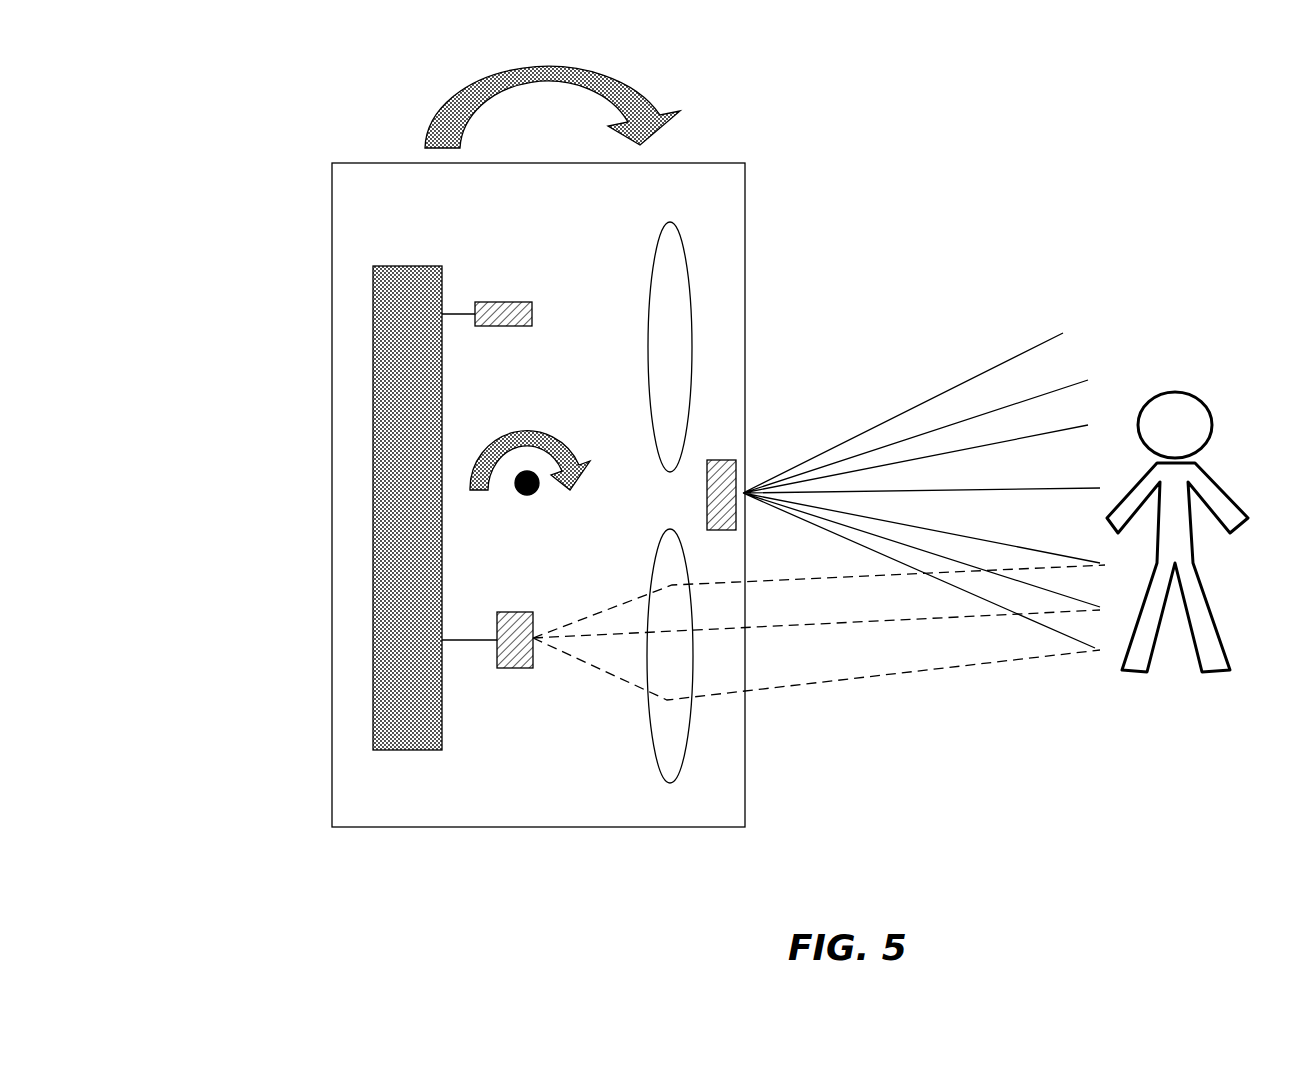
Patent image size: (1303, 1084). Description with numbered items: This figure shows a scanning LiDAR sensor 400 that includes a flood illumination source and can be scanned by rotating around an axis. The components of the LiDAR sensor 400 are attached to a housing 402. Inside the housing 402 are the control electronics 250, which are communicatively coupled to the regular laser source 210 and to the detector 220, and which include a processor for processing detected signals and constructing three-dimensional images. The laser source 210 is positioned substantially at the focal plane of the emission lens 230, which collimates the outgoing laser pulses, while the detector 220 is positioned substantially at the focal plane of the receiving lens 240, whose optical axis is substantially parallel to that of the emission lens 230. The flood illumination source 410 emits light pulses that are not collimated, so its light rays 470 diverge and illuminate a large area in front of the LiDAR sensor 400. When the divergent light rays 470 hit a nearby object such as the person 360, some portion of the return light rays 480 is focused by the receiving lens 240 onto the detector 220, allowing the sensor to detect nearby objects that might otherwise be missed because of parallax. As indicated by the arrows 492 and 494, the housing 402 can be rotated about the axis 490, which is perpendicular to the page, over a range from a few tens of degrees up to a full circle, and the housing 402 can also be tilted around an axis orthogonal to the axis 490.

The LiDAR sensor 400 is at (527, 495).
The housing 402 is at (745, 232).
The control electronics 250 is at (410, 266).
The laser source 210 is at (500, 302).
The emission lens 230 is at (653, 263).
The receiving lens 240 is at (657, 557).
The flood illumination source 410 is at (707, 512).
The axis 490 is at (523, 495).
The arrow 492 is at (565, 448).
The arrow 494 is at (620, 88).
The detector 220 is at (512, 668).
The light rays 470 is at (927, 400).
The return light rays 480 is at (892, 675).
The person 360 is at (1175, 392).